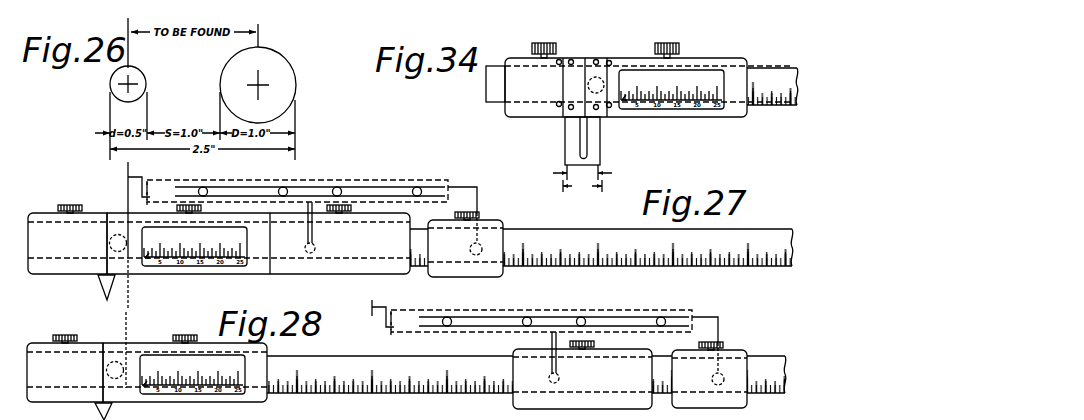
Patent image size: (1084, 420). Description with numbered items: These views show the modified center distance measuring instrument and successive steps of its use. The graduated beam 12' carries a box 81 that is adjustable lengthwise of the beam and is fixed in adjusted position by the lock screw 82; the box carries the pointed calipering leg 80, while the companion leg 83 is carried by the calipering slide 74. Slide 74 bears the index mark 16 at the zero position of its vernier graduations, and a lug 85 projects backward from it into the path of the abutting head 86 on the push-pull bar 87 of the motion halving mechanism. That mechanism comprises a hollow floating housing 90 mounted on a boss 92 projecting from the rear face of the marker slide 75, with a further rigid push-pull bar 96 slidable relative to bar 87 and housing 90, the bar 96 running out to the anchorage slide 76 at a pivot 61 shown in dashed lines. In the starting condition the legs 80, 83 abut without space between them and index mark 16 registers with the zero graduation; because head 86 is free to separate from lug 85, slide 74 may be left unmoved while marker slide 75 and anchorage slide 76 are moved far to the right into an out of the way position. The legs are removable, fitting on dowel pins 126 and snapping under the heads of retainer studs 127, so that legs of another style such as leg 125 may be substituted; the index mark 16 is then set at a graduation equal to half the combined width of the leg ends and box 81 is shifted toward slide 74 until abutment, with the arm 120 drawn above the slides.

In FIG. 34, the beam 12' is at (632, 82).
In FIG. 27, the beam 12' is at (595, 243).
In FIG. 28, the beam 12' is at (526, 371).
In FIG. 34, the index mark 16 is at (623, 100).
In FIG. 27, the index mark 16 is at (147, 258).
In FIG. 28, the index mark 16 is at (146, 386).
In FIG. 27, the pivot pin of slider block 61 is at (472, 248).
In FIG. 28, the pivot pin of slider block 61 is at (713, 378).
In FIG. 34, the calipering slide 74 is at (706, 61).
In FIG. 27, the calipering slide 74 is at (132, 273).
In FIG. 28, the calipering slide 74 is at (267, 398).
In FIG. 27, the marker slide 75 is at (258, 239).
In FIG. 28, the marker slide 75 is at (582, 375).
In FIG. 27, the anchorage slide 76 is at (500, 273).
In FIG. 28, the anchorage slide 76 is at (746, 404).
In FIG. 27, the calipering leg 80 is at (98, 284).
In FIG. 28, the calipering leg 80 is at (95, 410).
In FIG. 34, the box 81 is at (647, 87).
In FIG. 27, the box 81 is at (219, 239).
In FIG. 28, the box 81 is at (147, 368).
In FIG. 34, the lock screw 82 is at (537, 45).
In FIG. 27, the companion leg 83 is at (116, 288).
In FIG. 28, the companion leg 83 is at (112, 407).
In FIG. 27, the lug 85 is at (117, 234).
In FIG. 28, the lug 85 is at (115, 361).
In FIG. 27, the abutting head 86 is at (131, 176).
In FIG. 28, the abutting head 86 is at (375, 306).
In FIG. 27, the push-pull bar 87 is at (147, 204).
In FIG. 28, the push-pull bar 87 is at (392, 335).
In FIG. 27, the floating frame or housing 90 is at (396, 186).
In FIG. 28, the floating frame or housing 90 is at (620, 316).
In FIG. 27, the boss 92 is at (305, 248).
In FIG. 28, the boss 92 is at (549, 378).
In FIG. 27, the push-pull rigid bar 96 is at (460, 187).
In FIG. 28, the push-pull rigid bar 96 is at (702, 317).
In FIG. 27, the arm 120 is at (147, 181).
In FIG. 28, the arm 120 is at (391, 311).
In FIG. 34, the calipering leg 125 is at (571, 146).
In FIG. 34, the dowel pins 126 is at (596, 59).
In FIG. 34, the retainer studs 127 is at (560, 59).